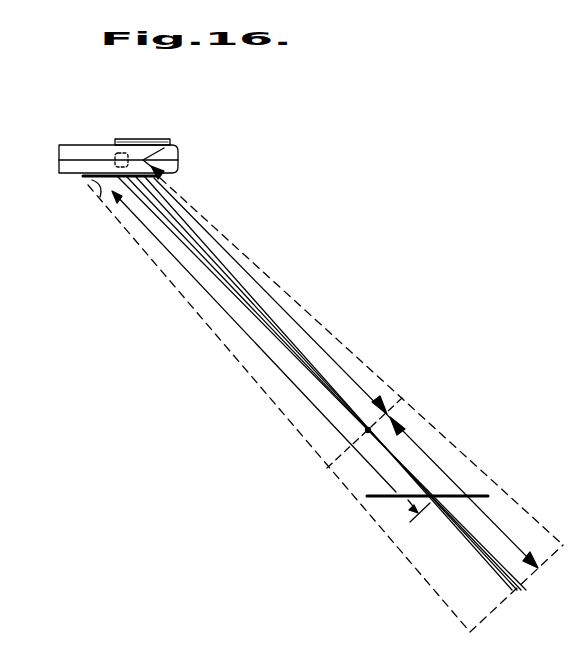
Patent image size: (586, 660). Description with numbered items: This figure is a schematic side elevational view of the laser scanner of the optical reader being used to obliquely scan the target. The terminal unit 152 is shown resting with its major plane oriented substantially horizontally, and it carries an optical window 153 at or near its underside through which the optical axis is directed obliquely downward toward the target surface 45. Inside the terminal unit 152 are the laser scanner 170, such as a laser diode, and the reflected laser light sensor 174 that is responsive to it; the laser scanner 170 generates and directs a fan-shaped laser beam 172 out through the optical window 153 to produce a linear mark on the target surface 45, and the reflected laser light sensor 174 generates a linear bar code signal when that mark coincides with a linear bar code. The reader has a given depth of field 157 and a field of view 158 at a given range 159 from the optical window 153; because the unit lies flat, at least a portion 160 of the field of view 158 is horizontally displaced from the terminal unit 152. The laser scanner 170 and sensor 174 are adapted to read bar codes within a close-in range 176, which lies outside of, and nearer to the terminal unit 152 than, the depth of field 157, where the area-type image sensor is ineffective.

The terminal unit 152 is at (181, 152).
The reflected laser light sensor 174 is at (133, 152).
The laser scanner 170 is at (114, 149).
The optical window 153 is at (102, 188).
The range 159 is at (181, 268).
The laser beam 172 is at (184, 226).
The close-in range 176 is at (244, 262).
The depth of field 157 is at (440, 467).
The portion of the field of view 160 is at (388, 342).
The target surface 45 is at (377, 498).
The field of view 158 is at (483, 623).